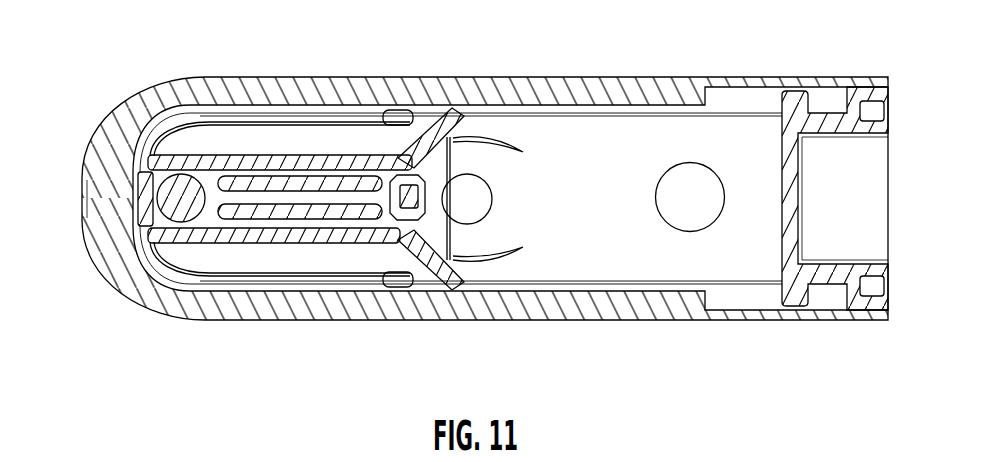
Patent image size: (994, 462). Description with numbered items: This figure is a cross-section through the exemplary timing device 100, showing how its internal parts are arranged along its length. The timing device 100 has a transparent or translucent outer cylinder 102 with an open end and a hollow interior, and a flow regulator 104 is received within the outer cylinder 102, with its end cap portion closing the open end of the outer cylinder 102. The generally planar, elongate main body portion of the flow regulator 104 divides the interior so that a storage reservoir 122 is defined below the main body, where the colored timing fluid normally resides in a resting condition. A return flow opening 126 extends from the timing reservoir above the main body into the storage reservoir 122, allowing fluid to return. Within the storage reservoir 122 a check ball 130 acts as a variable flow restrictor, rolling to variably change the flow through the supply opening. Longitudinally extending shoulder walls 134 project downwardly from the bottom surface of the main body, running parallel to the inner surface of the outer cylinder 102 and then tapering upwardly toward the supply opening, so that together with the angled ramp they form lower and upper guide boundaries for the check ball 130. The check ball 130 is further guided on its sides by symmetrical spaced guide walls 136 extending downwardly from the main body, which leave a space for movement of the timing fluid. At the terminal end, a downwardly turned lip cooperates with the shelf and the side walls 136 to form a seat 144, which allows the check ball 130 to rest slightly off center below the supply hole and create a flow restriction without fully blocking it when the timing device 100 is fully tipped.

The timing device 100 is at (495, 193).
The outer cylinder 102 is at (683, 78).
The flow regulator 104 is at (862, 180).
The storage reservoir 122 is at (552, 161).
The return flow opening 126 is at (467, 207).
The check ball 130 is at (182, 192).
The shoulder walls 134 is at (313, 185).
The guide walls 136 is at (243, 163).
The seat 144 is at (166, 234).